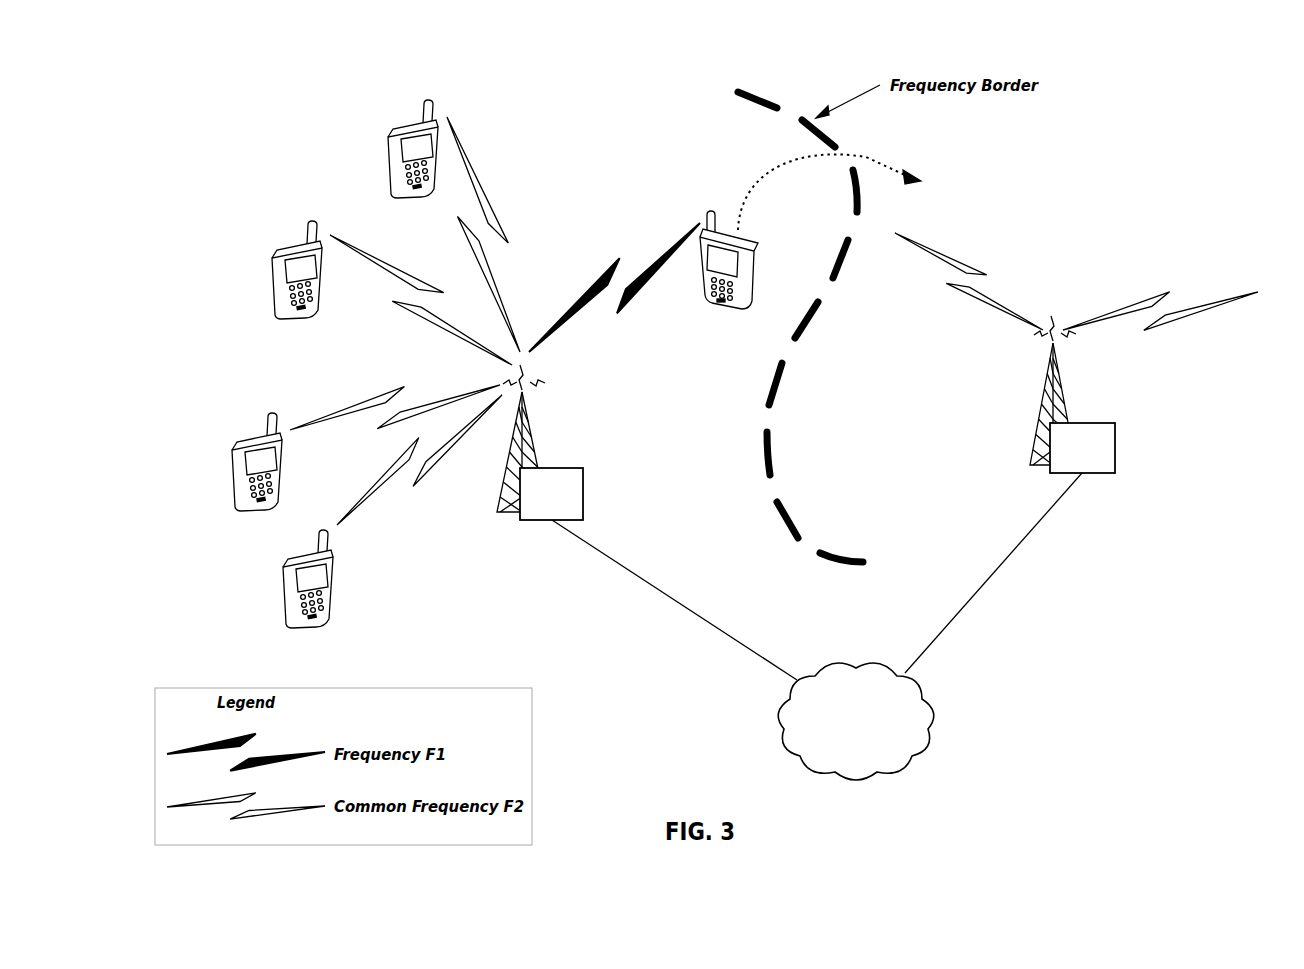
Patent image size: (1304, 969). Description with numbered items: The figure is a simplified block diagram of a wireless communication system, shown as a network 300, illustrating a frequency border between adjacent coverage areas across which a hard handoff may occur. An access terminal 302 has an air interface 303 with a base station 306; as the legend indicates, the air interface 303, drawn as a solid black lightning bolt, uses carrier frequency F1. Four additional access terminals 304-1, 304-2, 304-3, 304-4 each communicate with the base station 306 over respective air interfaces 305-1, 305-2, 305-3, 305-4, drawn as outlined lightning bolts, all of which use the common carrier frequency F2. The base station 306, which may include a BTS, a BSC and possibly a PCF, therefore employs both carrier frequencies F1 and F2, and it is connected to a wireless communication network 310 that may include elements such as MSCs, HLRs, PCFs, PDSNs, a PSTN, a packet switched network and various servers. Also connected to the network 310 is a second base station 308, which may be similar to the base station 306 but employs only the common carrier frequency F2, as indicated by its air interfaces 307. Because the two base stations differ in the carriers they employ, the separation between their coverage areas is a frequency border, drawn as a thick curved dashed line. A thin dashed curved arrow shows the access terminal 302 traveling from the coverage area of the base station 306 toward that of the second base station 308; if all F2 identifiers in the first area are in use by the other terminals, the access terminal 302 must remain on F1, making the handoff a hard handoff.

The network 300 is at (654, 711).
The access terminal 302 is at (754, 256).
The air interface 303 is at (677, 240).
The access terminal 304-1 is at (387, 163).
The access terminal 304-2 is at (271, 266).
The access terminal 304-3 is at (231, 477).
The access terminal 304-4 is at (282, 592).
The air interface 305-1 is at (462, 153).
The air interface 305-2 is at (395, 310).
The air interface 305-3 is at (345, 406).
The air interface 305-4 is at (363, 507).
The base station 306 is at (583, 483).
The air interfaces 307 is at (1143, 300).
The second base station 308 is at (1115, 437).
The wireless communication network 310 is at (931, 714).